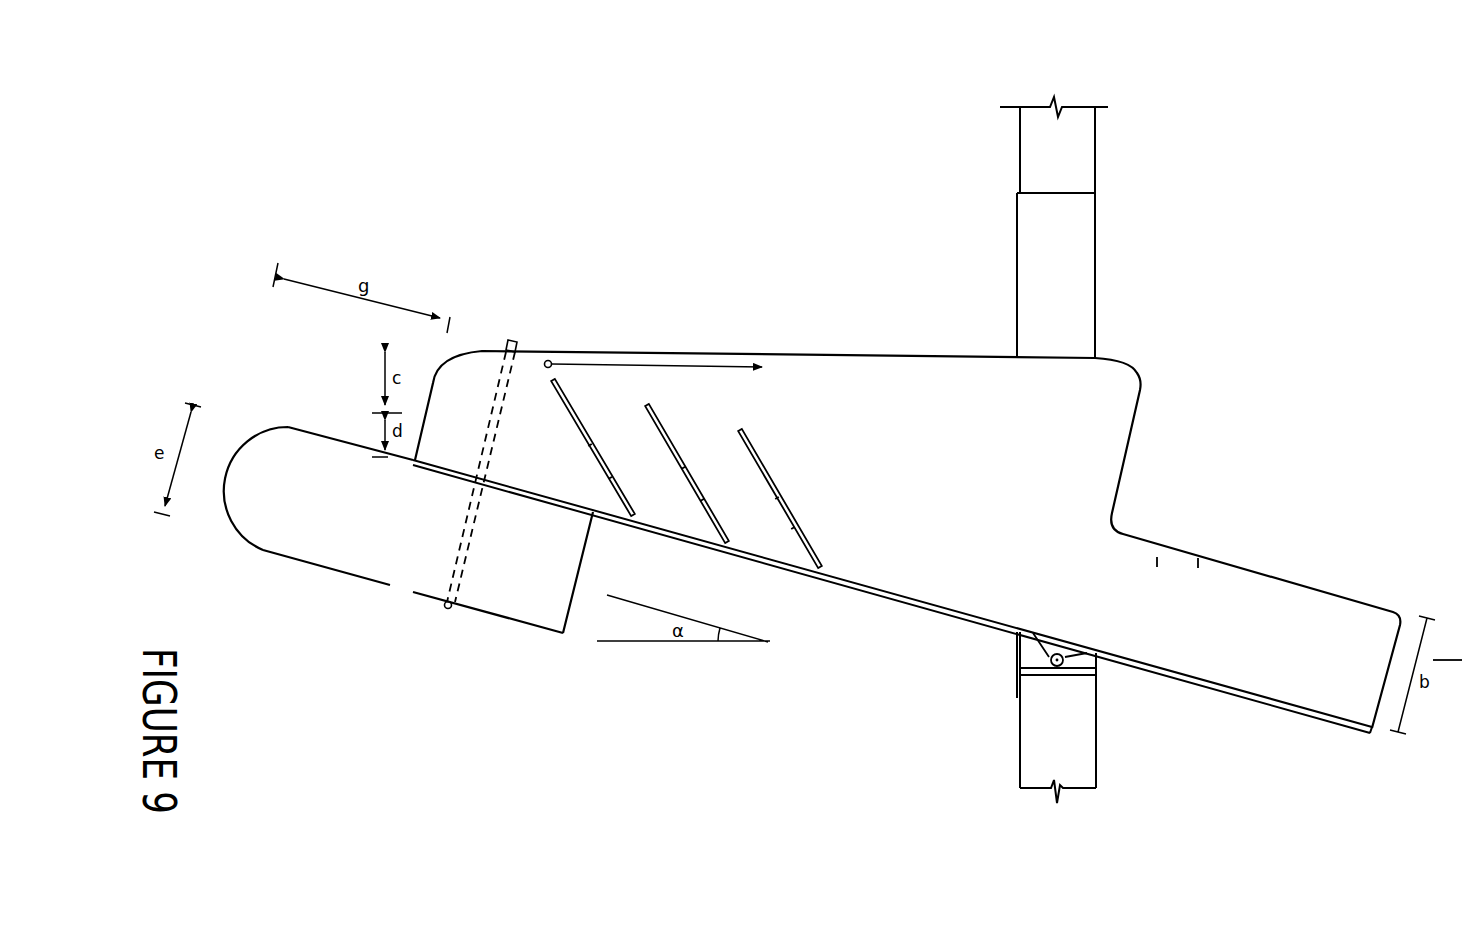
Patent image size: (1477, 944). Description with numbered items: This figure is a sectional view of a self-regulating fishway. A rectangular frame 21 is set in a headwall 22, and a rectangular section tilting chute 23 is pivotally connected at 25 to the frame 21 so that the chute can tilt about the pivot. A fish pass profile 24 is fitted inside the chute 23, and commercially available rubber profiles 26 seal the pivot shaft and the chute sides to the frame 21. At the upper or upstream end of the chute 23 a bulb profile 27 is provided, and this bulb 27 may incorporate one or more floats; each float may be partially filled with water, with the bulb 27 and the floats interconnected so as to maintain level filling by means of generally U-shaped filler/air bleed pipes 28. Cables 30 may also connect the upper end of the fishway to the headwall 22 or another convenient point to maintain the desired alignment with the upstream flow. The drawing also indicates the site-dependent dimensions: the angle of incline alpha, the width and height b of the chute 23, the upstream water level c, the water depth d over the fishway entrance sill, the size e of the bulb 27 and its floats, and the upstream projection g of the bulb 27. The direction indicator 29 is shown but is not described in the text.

The rectangular frame 21 is at (1070, 255).
The headwall 22 is at (1072, 168).
The tilting chute 23 is at (980, 585).
The fish pass profile 24 is at (767, 467).
The pivotal connection 25 is at (1070, 663).
The rubber profiles 26 is at (1050, 668).
The bulb profile 27 is at (373, 527).
The filler/air bleed pipes 28 is at (517, 337).
The direction arrow 29 is at (1448, 652).
The cables 30 is at (698, 360).